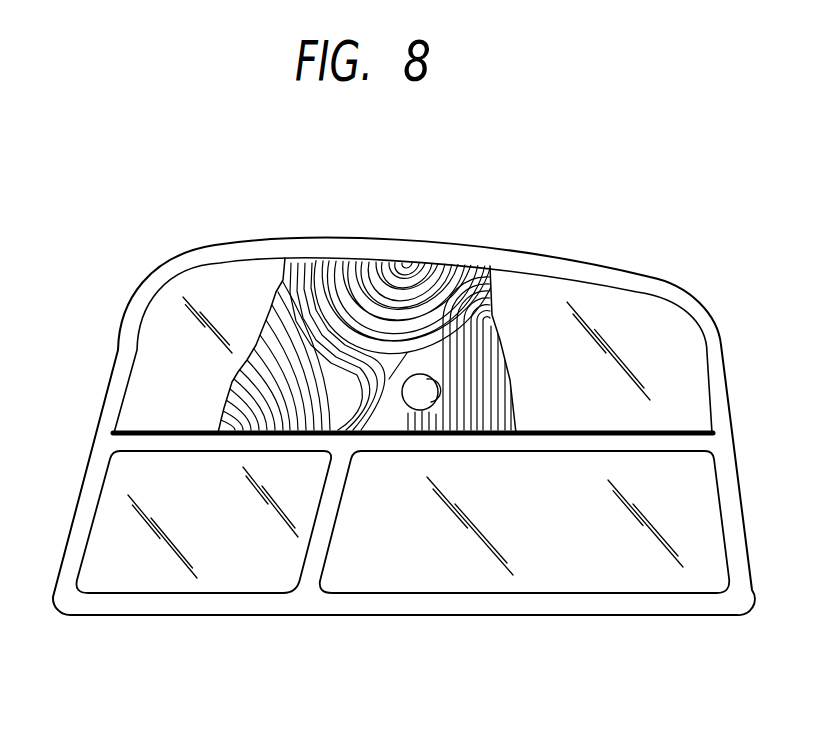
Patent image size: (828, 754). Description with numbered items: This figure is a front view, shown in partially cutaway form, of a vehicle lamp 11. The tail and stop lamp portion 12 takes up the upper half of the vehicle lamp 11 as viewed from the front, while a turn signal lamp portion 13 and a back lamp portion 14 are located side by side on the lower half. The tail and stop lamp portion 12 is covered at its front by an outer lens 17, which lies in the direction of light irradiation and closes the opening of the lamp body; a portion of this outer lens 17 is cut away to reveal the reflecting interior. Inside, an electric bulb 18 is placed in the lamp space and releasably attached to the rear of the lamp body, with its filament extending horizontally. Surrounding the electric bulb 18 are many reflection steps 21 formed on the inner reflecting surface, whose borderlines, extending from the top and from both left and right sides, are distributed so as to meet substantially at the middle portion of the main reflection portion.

The vehicle lamp 11 is at (540, 180).
The tail and stop lamp portion 12 is at (637, 292).
The turn signal lamp portion 13 is at (503, 594).
The back lamp portion 14 is at (213, 594).
The outer lens 17 is at (547, 296).
The electric bulb 18 is at (428, 403).
The reflection steps 21 is at (306, 280).